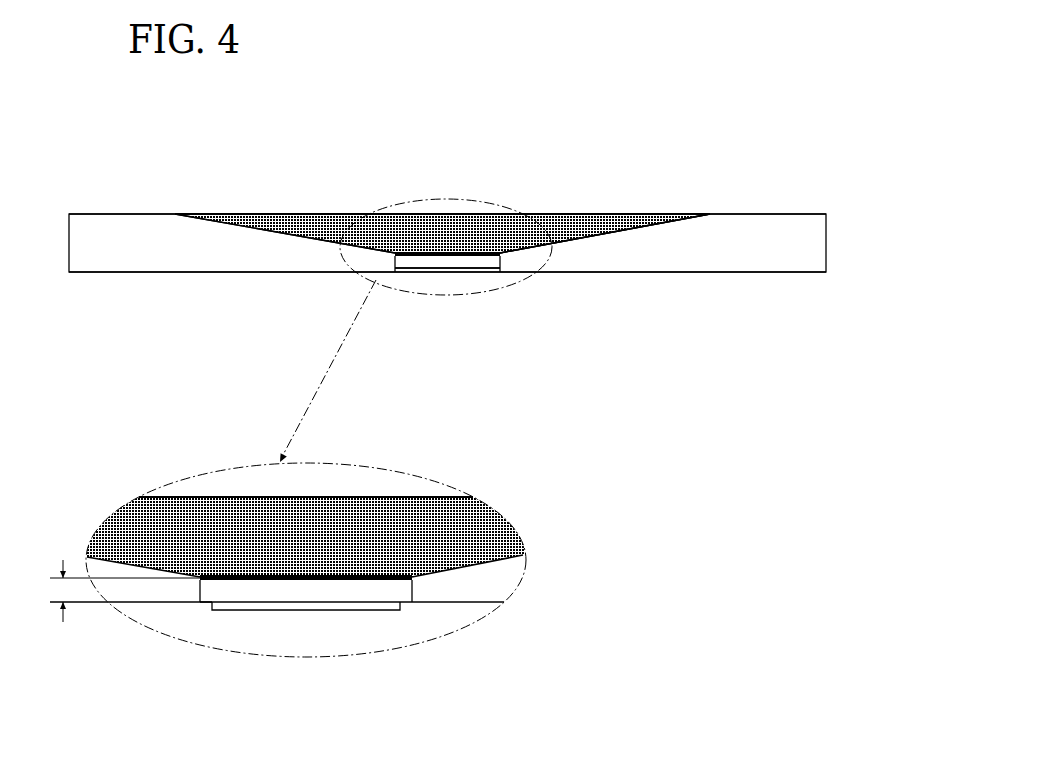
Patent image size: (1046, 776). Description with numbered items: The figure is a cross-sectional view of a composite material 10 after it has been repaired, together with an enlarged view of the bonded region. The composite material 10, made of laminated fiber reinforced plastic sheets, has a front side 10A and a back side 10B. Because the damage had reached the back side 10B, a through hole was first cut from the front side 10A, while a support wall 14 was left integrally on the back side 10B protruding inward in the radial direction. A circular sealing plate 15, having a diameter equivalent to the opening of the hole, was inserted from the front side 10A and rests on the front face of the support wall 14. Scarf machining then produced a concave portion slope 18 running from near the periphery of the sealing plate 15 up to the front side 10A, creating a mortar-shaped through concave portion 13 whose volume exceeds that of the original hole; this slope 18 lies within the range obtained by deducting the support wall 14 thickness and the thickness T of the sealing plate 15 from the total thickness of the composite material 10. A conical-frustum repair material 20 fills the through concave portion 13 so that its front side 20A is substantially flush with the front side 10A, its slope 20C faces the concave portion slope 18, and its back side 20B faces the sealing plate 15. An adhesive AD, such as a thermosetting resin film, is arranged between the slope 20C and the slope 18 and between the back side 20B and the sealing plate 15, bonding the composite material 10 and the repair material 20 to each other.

The composite material 10 is at (844, 199).
The front side 10A is at (113, 213).
The back side 10B is at (145, 273).
The through concave portion 13 is at (655, 227).
The support wall 14 is at (405, 273).
The sealing plate 15 is at (435, 273).
The concave portion slope 18 is at (238, 213).
The repair material 20 is at (566, 204).
The front side of repair material 20A is at (313, 213).
The back side of repair material 20B is at (491, 268).
The slope of repair material 20C is at (623, 233).
The adhesive AD is at (377, 581).
The thickness of sealing plate T is at (113, 591).